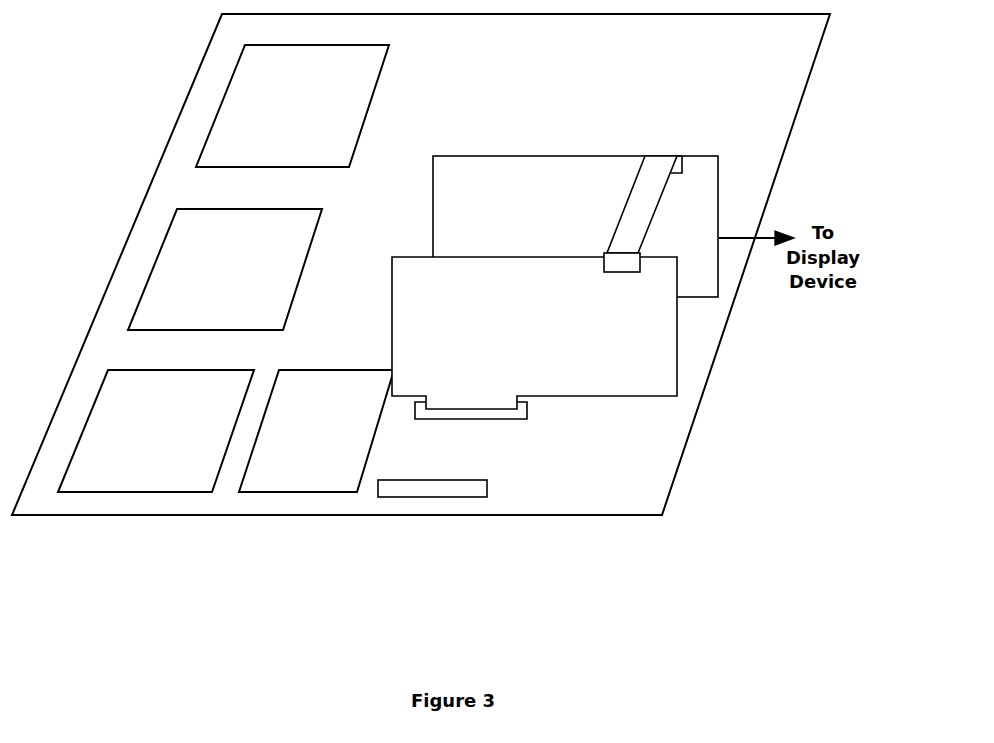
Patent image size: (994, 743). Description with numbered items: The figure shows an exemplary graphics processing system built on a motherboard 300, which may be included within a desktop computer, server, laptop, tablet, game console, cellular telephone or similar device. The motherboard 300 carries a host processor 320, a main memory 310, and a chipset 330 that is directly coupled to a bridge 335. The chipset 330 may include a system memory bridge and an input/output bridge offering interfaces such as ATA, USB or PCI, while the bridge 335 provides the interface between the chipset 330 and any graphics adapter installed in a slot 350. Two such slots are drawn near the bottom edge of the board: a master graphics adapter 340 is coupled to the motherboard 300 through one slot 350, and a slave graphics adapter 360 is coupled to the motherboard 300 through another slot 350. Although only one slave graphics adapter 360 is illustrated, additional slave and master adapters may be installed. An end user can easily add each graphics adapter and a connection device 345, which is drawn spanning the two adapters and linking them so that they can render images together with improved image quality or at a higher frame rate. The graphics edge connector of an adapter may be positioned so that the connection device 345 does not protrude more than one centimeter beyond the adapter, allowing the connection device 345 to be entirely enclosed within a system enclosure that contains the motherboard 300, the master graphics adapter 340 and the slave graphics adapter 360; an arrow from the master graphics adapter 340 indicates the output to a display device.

The motherboard 300 is at (731, 71).
The host processor 320 is at (284, 138).
The chipset 330 is at (208, 293).
The main memory 310 is at (142, 468).
The bridge 335 is at (309, 454).
The master graphics adapter 340 is at (522, 234).
The slave graphics adapter 360 is at (517, 347).
The slot 350 is at (527, 410).
The connection device 345 is at (667, 155).